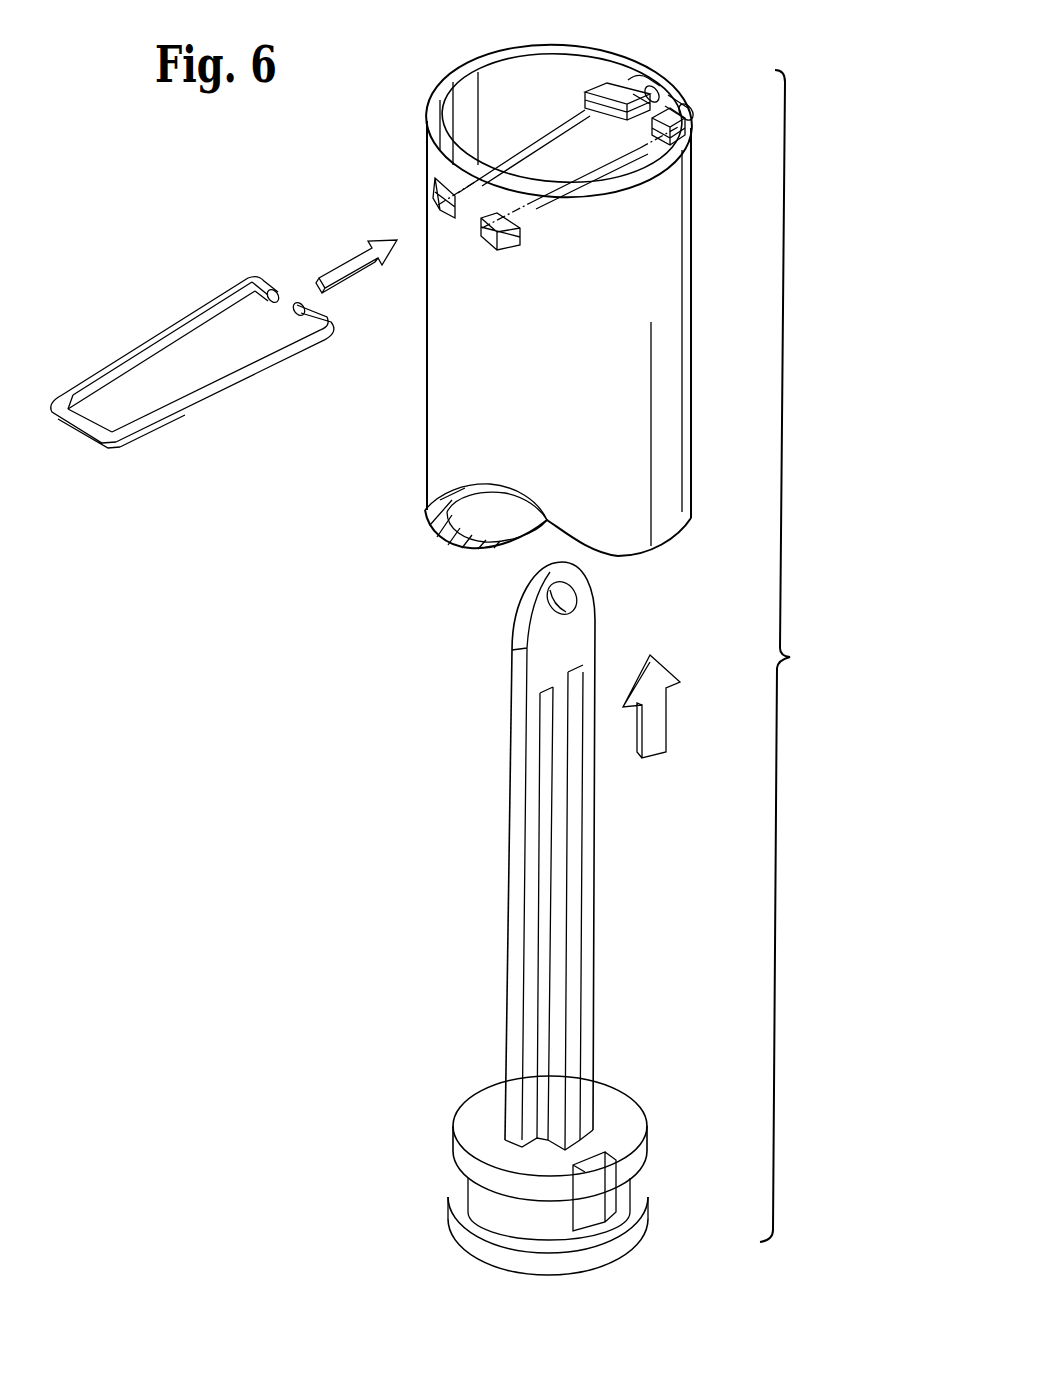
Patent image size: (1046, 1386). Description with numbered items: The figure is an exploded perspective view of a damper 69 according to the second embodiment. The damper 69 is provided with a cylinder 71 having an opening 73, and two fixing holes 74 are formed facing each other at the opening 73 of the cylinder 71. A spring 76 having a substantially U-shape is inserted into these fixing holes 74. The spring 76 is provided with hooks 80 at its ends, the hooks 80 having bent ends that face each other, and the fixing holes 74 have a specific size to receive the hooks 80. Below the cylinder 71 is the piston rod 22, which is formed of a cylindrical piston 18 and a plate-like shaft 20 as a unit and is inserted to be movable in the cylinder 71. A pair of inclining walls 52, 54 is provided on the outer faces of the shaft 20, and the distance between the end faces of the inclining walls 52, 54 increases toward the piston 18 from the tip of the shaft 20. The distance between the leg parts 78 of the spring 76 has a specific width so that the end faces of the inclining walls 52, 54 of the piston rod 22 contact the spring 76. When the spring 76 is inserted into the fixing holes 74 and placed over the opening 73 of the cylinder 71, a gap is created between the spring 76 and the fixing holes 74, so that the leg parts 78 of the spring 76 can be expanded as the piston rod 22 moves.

The piston 18 is at (624, 1108).
The shaft 20 is at (555, 856).
The piston rod 22 is at (640, 850).
The inclining wall 52 is at (585, 952).
The inclining wall 54 is at (495, 1108).
The damper 69 is at (799, 656).
The cylinder 71 is at (591, 278).
The opening 73 is at (548, 78).
The fixing holes 74 is at (589, 92).
The spring 76 is at (404, 262).
The leg parts 78 is at (538, 135).
The hooks 80 is at (646, 85).